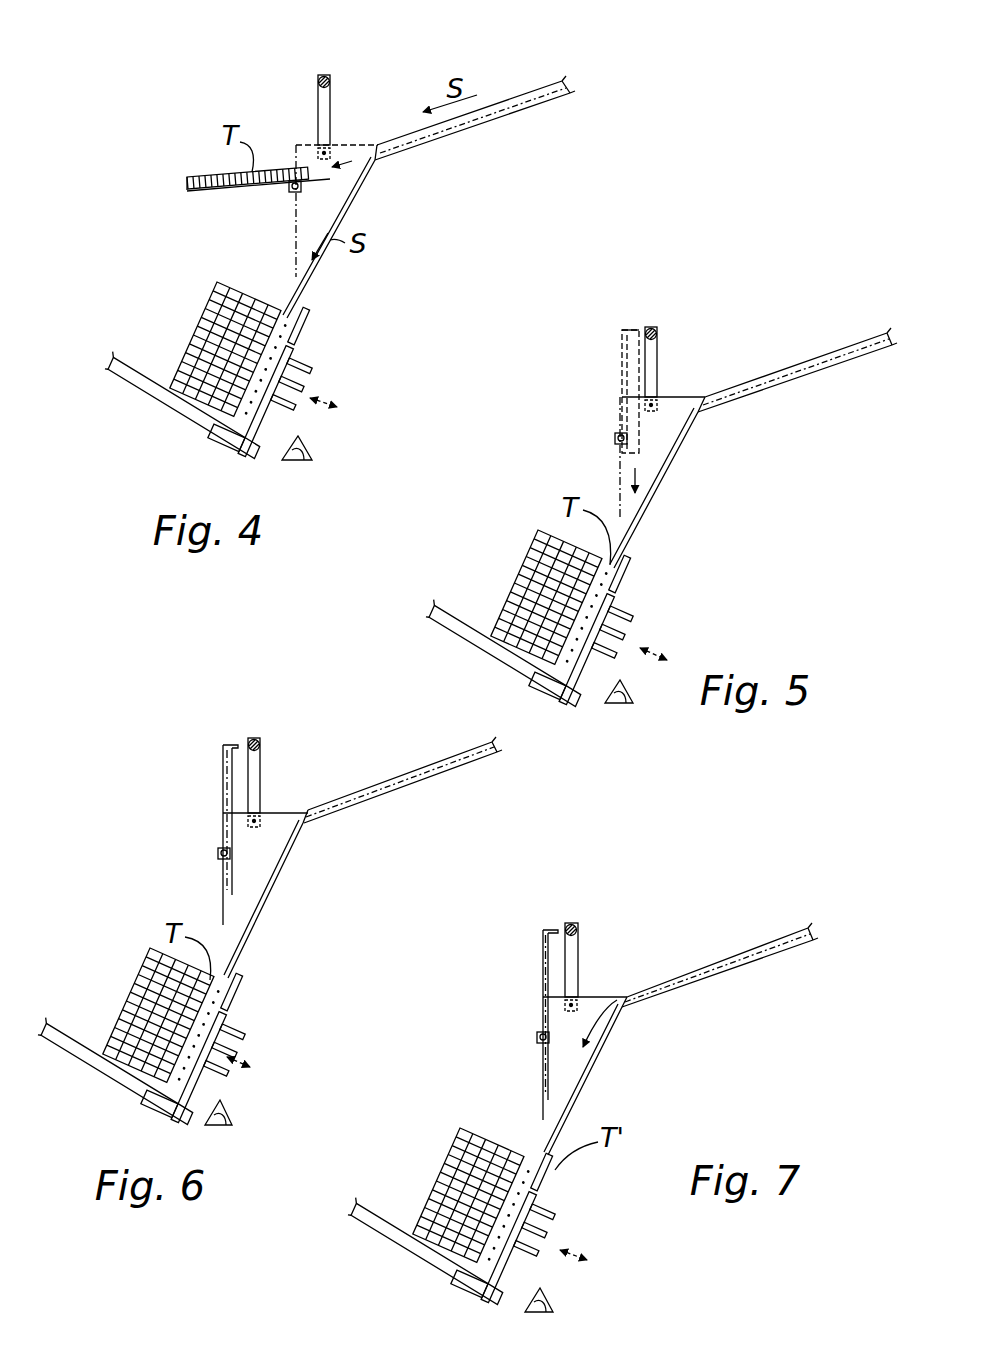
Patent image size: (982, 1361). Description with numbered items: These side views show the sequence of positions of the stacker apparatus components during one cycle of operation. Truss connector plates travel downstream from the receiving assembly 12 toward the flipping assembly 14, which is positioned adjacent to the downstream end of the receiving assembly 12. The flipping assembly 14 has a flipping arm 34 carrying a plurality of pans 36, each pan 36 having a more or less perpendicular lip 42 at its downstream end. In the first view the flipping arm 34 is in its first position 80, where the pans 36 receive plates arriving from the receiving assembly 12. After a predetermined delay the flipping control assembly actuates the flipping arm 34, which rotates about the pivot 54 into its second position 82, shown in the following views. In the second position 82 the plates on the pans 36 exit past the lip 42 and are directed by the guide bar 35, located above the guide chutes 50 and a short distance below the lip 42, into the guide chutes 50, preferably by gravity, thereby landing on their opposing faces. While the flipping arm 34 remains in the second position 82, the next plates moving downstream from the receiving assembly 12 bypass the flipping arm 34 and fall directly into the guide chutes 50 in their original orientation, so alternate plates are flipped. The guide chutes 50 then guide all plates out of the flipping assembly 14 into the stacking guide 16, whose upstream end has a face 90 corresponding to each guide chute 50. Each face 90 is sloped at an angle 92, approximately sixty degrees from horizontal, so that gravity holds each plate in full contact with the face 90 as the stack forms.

In FIG. 4, the receiving assembly 12 is at (522, 80).
In FIG. 5, the receiving assembly 12 is at (825, 338).
In FIG. 6, the receiving assembly 12 is at (420, 758).
In FIG. 7, the receiving assembly 12 is at (760, 930).
In FIG. 4, the flipping assembly 14 is at (293, 92).
In FIG. 5, the flipping assembly 14 is at (633, 282).
In FIG. 6, the flipping assembly 14 is at (210, 715).
In FIG. 7, the flipping assembly 14 is at (543, 900).
In FIG. 4, the stacking guide 16 is at (138, 386).
In FIG. 5, the stacking guide 16 is at (461, 633).
In FIG. 6, the stacking guide 16 is at (84, 1066).
In FIG. 7, the stacking guide 16 is at (394, 1238).
In FIG. 4, the flipping arm 34 is at (188, 176).
In FIG. 5, the flipping arm 34 is at (620, 350).
In FIG. 6, the flipping arm 34 is at (222, 778).
In FIG. 7, the flipping arm 34 is at (540, 990).
In FIG. 4, the guide bar 35 is at (330, 80).
In FIG. 5, the guide bar 35 is at (658, 330).
In FIG. 6, the guide bar 35 is at (262, 745).
In FIG. 7, the guide bar 35 is at (578, 928).
In FIG. 4, the pans 36 is at (248, 188).
In FIG. 5, the pans 36 is at (620, 375).
In FIG. 6, the pans 36 is at (225, 795).
In FIG. 7, the pans 36 is at (540, 950).
In FIG. 4, the lip 42 is at (187, 192).
In FIG. 5, the lip 42 is at (632, 330).
In FIG. 6, the lip 42 is at (236, 745).
In FIG. 7, the lip 42 is at (551, 930).
In FIG. 4, the guide chutes 50 is at (335, 200).
In FIG. 5, the guide chutes 50 is at (660, 442).
In FIG. 6, the guide chutes 50 is at (258, 862).
In FIG. 7, the guide chutes 50 is at (567, 1073).
In FIG. 4, the pivot 54 is at (293, 194).
In FIG. 5, the pivot 54 is at (615, 440).
In FIG. 6, the pivot 54 is at (218, 855).
In FIG. 7, the pivot 54 is at (535, 1038).
In FIG. 4, the first position 80 is at (175, 183).
In FIG. 5, the second position 82 is at (610, 340).
In FIG. 6, the second position 82 is at (200, 750).
In FIG. 7, the second position 82 is at (530, 963).
In FIG. 4, the face 90 is at (305, 333).
In FIG. 5, the face 90 is at (625, 585).
In FIG. 6, the face 90 is at (225, 1000).
In FIG. 7, the face 90 is at (548, 1186).
In FIG. 4, the angle 92 is at (302, 452).
In FIG. 5, the angle 92 is at (624, 692).
In FIG. 6, the angle 92 is at (230, 1112).
In FIG. 7, the angle 92 is at (548, 1300).